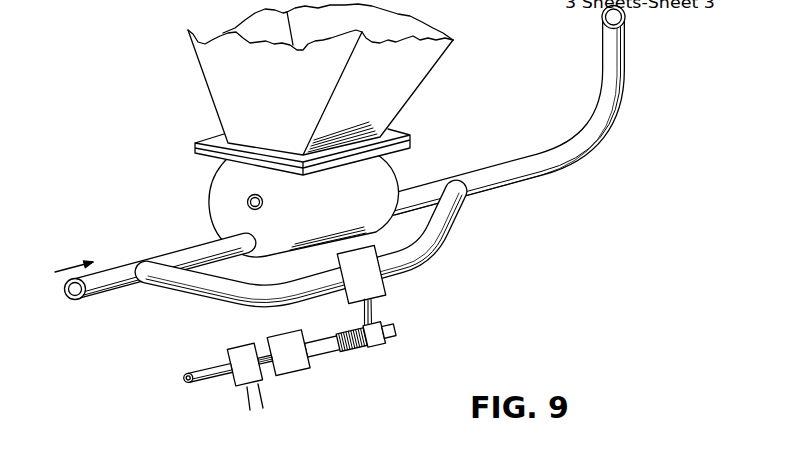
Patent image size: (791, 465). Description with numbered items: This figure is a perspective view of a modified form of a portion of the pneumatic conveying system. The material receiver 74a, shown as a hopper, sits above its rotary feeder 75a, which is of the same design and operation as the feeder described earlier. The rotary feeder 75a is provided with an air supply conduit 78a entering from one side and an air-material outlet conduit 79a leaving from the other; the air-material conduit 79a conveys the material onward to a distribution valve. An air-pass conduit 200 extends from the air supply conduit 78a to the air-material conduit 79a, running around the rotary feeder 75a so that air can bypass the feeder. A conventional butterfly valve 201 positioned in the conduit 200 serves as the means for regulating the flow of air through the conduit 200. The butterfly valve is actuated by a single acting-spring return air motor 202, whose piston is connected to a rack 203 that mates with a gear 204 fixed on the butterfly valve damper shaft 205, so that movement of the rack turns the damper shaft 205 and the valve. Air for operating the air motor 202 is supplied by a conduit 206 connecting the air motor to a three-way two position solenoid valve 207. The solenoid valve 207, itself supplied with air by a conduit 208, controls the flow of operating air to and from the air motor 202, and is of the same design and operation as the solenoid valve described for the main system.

The material receiver 74a is at (238, 88).
The rotary feeder 75a is at (235, 175).
The air supply conduit 78a is at (110, 278).
The air-material outlet conduit 79a is at (517, 172).
The air-pass conduit 200 is at (188, 275).
The butterfly valve 201 is at (382, 287).
The single acting-spring return air motor 202 is at (282, 345).
The rack 203 is at (321, 354).
The gear 204 is at (374, 344).
The butterfly valve damper shaft 205 is at (374, 313).
The conduit 206 is at (265, 362).
The three-way two position solenoid valve 207 is at (244, 357).
The conduit 208 is at (203, 373).